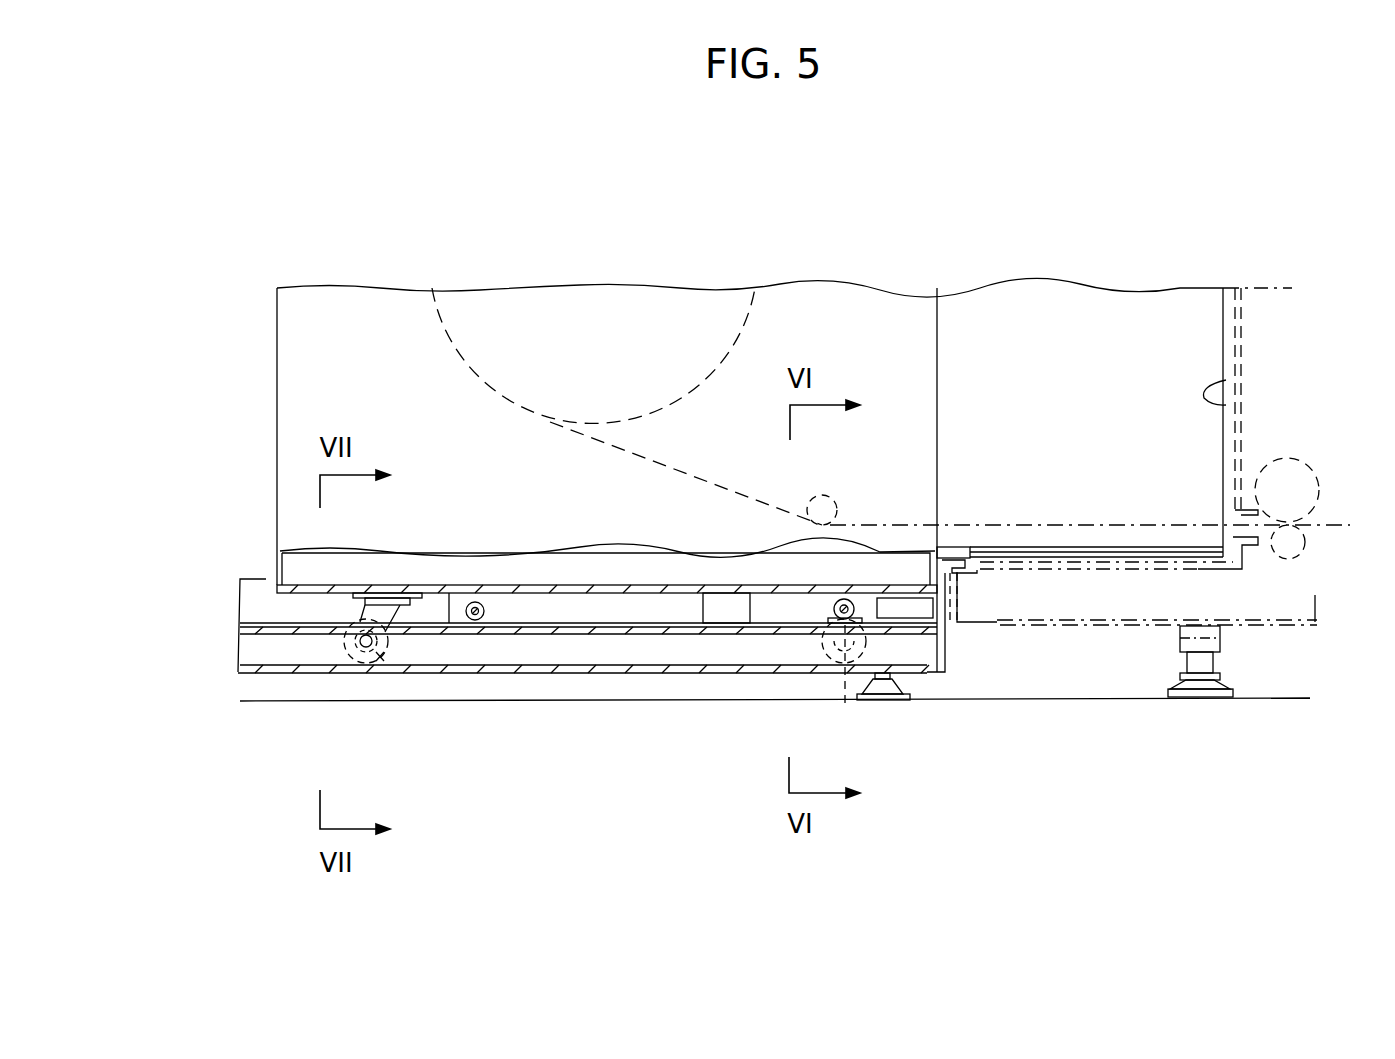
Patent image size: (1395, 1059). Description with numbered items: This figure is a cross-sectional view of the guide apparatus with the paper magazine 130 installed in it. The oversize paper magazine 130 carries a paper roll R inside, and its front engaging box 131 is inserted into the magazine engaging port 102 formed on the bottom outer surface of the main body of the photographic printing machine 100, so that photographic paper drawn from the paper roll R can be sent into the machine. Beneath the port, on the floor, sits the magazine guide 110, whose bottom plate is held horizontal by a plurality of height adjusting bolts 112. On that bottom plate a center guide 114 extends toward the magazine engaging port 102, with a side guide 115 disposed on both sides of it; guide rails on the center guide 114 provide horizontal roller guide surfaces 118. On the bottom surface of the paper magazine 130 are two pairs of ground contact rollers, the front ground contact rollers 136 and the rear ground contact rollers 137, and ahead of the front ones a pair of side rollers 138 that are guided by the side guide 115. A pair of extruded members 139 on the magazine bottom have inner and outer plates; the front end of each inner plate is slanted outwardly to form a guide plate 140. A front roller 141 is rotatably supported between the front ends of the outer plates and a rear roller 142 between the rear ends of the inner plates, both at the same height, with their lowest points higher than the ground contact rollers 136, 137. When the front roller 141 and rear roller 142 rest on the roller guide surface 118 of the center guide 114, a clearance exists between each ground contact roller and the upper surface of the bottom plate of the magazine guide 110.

The photographic printing machine 100 is at (1234, 275).
The magazine engaging port 102 is at (1245, 382).
The magazine guide 110 is at (635, 672).
The height adjusting bolts 112 is at (900, 692).
The center guide 114 is at (690, 635).
The side guide 115 is at (258, 596).
The horizontal roller guide surfaces 118 is at (567, 594).
The paper magazine 130 is at (272, 284).
The engaging box 131 is at (1062, 318).
The front ground contact rollers 136 is at (850, 700).
The rear ground contact rollers 137 is at (378, 656).
The side rollers 138 is at (918, 605).
The extruded members 139 is at (541, 607).
The guide plate 140 is at (727, 610).
The front roller 141 is at (858, 614).
The rear roller 142 is at (478, 621).
The paper roll R is at (598, 315).